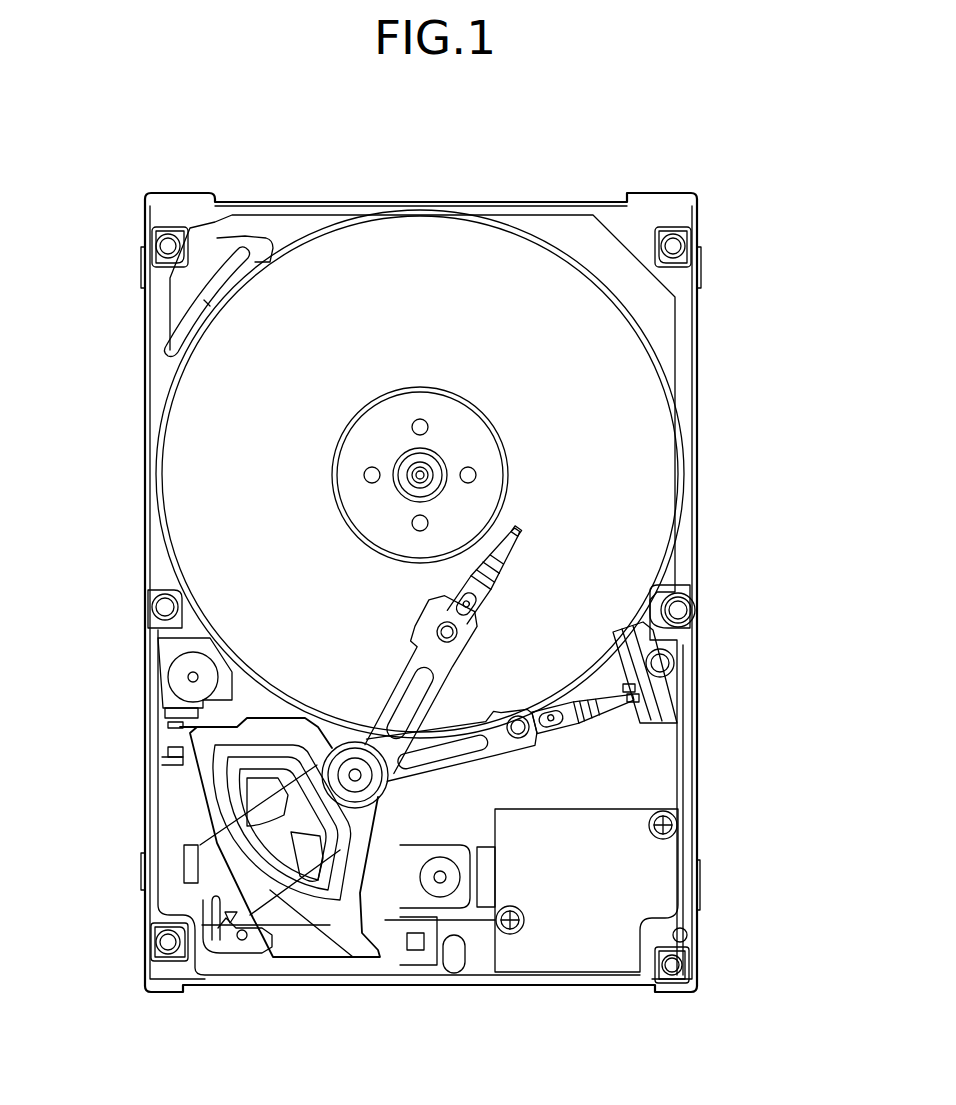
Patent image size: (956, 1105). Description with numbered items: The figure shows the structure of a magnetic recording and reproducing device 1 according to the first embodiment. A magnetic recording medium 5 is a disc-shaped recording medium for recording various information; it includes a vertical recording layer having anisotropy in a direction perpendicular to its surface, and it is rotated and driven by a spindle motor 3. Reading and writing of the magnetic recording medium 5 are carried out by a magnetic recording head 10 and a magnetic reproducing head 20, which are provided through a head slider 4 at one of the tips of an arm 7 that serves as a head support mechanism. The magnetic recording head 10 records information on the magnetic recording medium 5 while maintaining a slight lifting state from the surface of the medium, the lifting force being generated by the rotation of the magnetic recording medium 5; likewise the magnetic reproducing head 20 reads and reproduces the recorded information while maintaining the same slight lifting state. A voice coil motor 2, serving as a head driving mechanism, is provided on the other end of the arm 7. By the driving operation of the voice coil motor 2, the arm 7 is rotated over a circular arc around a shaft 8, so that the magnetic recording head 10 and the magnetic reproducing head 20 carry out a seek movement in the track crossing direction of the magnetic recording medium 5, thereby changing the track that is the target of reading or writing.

The magnetic recording and reproducing device 1 is at (718, 150).
The voice coil motor 2 is at (337, 923).
The spindle motor 3 is at (394, 465).
The head slider 4 is at (519, 537).
The magnetic recording medium 5 is at (525, 255).
The arm 7 is at (446, 574).
The shaft 8 is at (338, 773).
The magnetic recording head 10 is at (650, 569).
The magnetic reproducing head 20 is at (526, 563).